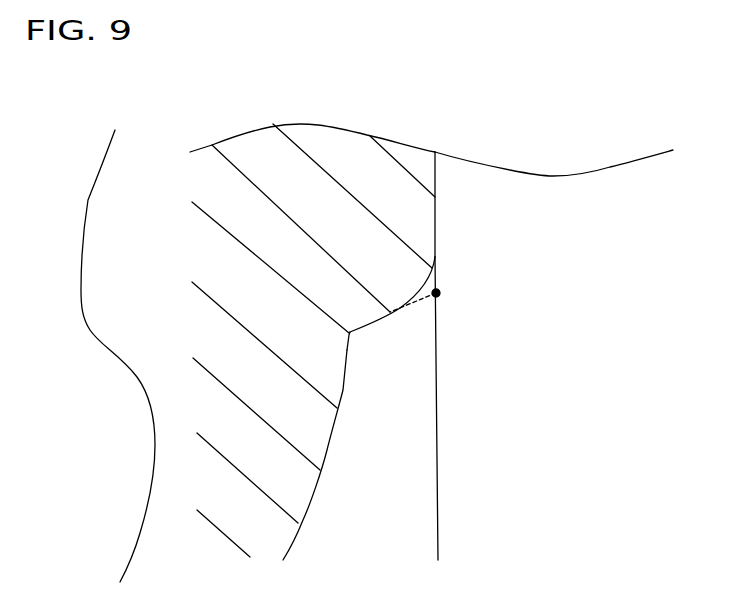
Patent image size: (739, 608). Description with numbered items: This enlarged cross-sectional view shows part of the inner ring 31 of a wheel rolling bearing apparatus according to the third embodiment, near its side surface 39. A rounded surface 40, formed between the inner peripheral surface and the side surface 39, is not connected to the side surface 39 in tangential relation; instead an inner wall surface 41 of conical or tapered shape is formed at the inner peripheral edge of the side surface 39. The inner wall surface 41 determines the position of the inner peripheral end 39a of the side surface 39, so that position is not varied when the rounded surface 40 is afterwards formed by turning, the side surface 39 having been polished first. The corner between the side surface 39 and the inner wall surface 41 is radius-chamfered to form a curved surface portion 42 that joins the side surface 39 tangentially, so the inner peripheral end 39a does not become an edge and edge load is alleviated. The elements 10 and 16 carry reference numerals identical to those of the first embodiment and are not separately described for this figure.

The body 10 is at (552, 186).
The gap 16 is at (434, 221).
The inner ring 31 is at (262, 144).
The side surface 39 is at (436, 236).
The inner peripheral end of the side surface 39a is at (438, 295).
The rounded surface 40 is at (320, 487).
The inner wall surface 41 is at (371, 325).
The curved surface portion 42 is at (422, 286).